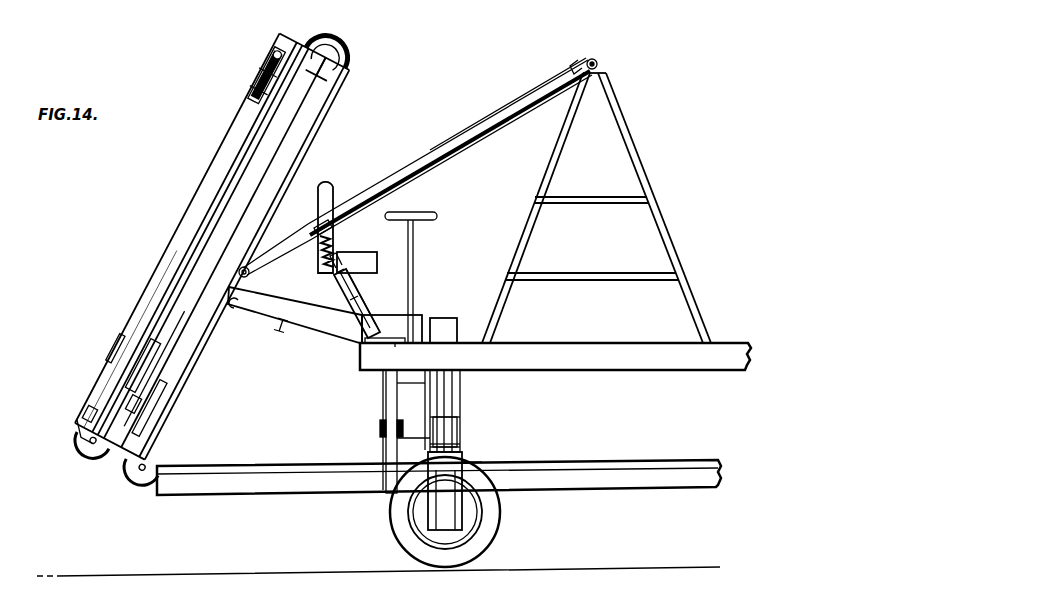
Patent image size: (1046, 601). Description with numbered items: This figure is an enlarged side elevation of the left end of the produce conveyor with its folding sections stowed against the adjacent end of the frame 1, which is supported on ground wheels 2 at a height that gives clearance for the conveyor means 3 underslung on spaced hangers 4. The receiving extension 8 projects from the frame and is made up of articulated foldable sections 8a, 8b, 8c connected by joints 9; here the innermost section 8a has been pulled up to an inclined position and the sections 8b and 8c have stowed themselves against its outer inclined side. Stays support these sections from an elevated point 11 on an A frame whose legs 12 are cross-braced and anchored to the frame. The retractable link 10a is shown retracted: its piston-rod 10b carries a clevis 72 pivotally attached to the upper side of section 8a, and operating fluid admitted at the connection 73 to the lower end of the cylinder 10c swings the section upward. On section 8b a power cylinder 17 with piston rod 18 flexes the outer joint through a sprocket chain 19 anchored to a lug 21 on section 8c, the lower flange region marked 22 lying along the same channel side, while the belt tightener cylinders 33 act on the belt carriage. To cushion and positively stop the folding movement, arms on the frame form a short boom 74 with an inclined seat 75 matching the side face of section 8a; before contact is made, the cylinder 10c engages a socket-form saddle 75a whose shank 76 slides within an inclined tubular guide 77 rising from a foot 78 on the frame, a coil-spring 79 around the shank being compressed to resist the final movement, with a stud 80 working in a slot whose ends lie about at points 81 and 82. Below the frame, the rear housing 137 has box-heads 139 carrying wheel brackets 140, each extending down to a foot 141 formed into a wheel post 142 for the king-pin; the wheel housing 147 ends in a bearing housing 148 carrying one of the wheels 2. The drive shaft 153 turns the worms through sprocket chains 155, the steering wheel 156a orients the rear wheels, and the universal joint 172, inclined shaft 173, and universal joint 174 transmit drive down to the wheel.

The frame 1 is at (556, 370).
The ground wheels 2 is at (494, 540).
The conveyor means 3 is at (628, 462).
The hangers 4 is at (386, 399).
The receiving extension 8 is at (181, 207).
The innermost conveyor section 8a is at (178, 361).
The intermediate conveyor section 8b is at (149, 391).
The outermost conveyor section 8c is at (152, 297).
The joints 9 is at (78, 441).
The retractable link 10a is at (418, 170).
The piston rod 10b is at (256, 277).
The cylinder 10c is at (503, 114).
The elevated point 11 is at (598, 64).
The legs 12 is at (494, 305).
The power cylinder 17 is at (150, 376).
The piston rod 18 is at (130, 412).
The sprocket chain 19 is at (95, 413).
The lug 21 is at (102, 408).
The side channel 22 is at (125, 376).
The belt tightener cylinders 33 is at (275, 78).
The clevis 72 is at (238, 271).
The connection 73 is at (316, 241).
The boom 74 is at (282, 331).
The inclined seat 75 is at (238, 309).
The spring anchor plate 75a is at (339, 228).
The shank 76 is at (340, 244).
The tubular guide 77 is at (358, 290).
The cylinder pedestal 78 is at (390, 337).
The coil-spring 79 is at (332, 272).
The stud 80 is at (345, 333).
The slot end point 81 is at (366, 312).
The slot end point 82 is at (348, 304).
The rear housing 137 is at (465, 389).
The box-heads 139 is at (464, 350).
The wheel bracket 140 is at (464, 383).
The foot 141 is at (428, 438).
The wheel post 142 is at (463, 428).
The wheel housing 147 is at (473, 462).
The bearing housing 148 is at (470, 517).
The drive shaft 153 is at (382, 430).
The sprocket chains 155 is at (377, 388).
The steering wheel 156a is at (440, 212).
The universal joint 172 is at (461, 445).
The inclined shaft 173 is at (423, 397).
The universal joint 174 is at (434, 356).